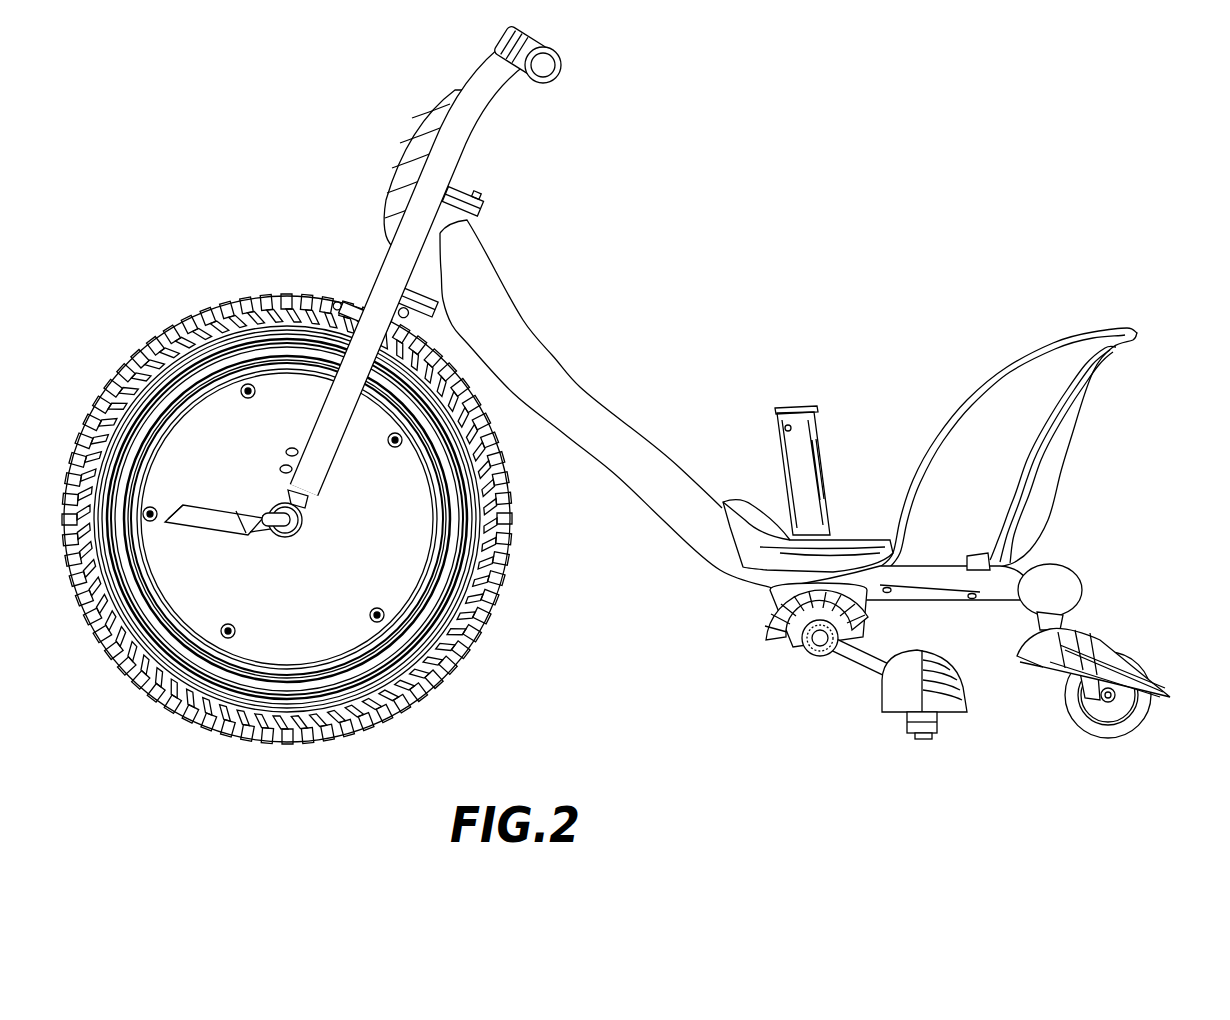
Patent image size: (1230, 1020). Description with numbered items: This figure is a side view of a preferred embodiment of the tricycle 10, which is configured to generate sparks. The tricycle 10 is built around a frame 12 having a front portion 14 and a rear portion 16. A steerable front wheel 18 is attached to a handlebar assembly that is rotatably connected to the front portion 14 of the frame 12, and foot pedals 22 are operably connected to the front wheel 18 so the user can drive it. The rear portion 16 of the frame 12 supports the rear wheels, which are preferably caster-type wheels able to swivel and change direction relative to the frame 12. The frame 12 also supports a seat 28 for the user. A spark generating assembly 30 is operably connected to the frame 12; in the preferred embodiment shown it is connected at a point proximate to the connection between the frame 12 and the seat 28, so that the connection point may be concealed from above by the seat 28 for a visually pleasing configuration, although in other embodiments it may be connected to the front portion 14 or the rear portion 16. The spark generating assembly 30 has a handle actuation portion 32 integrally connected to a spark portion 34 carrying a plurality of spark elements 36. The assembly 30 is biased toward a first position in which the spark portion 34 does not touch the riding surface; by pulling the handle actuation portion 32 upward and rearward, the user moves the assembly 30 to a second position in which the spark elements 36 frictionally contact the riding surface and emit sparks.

The tricycle 10 is at (636, 444).
The frame 12 is at (665, 446).
The front portion 14 is at (525, 328).
The rear portion 16 is at (1080, 565).
The steerable front wheel 18 is at (152, 330).
The foot pedals 22 is at (202, 535).
The seat 28 is at (1105, 373).
The spark generating assembly 30 is at (800, 644).
The handle actuation portion 32 is at (807, 408).
The spark portion 34 is at (874, 694).
The spark elements 36 is at (921, 756).